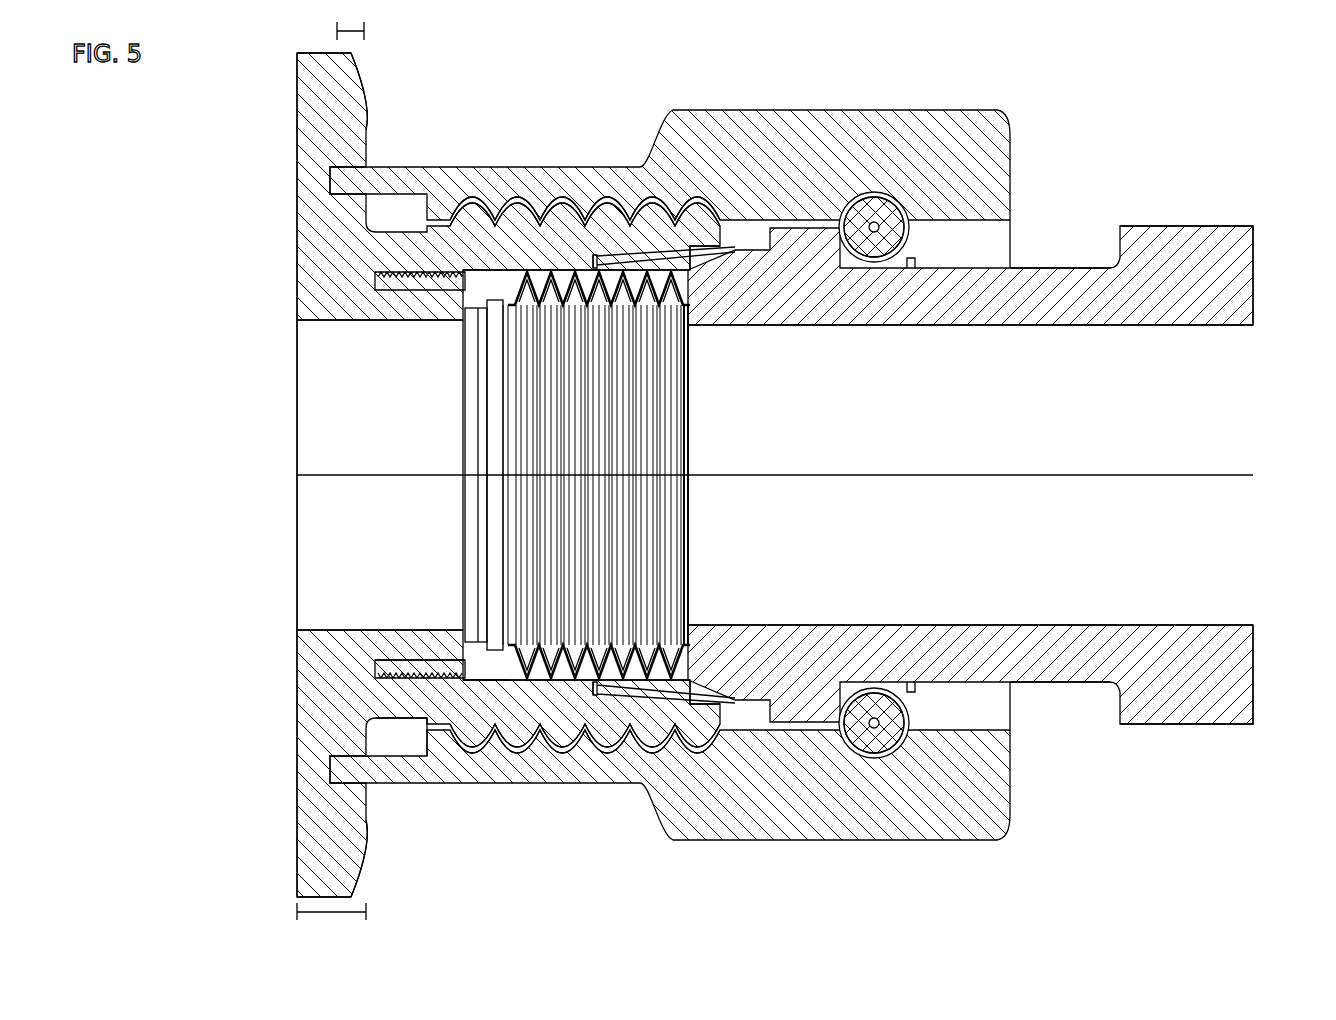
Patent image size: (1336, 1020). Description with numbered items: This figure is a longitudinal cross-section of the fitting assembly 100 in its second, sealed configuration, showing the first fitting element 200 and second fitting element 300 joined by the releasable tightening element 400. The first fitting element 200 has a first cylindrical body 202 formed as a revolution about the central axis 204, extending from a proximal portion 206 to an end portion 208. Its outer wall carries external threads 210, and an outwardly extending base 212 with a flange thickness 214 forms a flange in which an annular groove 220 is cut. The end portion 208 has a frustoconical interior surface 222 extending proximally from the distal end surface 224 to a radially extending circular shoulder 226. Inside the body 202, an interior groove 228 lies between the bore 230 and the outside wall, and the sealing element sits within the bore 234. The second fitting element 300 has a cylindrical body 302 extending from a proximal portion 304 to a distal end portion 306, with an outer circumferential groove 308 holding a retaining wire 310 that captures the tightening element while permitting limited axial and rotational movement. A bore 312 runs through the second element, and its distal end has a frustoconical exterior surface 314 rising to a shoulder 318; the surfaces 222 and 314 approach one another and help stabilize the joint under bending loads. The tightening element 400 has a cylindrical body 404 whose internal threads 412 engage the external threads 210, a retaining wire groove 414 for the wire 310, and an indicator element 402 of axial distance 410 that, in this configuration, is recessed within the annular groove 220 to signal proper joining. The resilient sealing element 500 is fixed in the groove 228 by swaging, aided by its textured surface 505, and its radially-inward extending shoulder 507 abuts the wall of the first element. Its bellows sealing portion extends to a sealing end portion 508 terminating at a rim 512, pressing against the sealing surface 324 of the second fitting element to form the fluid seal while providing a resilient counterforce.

The fitting assembly 100 is at (228, 158).
The first fitting element 200 is at (507, 473).
The first cylindrical body 202 is at (485, 235).
The central axis 204 is at (355, 480).
The proximal portion 206 is at (268, 98).
The end portion 208 is at (690, 682).
The external threads 210 is at (545, 212).
The base 212 is at (297, 135).
The flange thickness 214 is at (366, 912).
The annular groove 220 is at (340, 762).
The frustoconical interior surface 222 is at (700, 282).
The distal end surface 224 is at (745, 240).
The circular shoulder 226 is at (668, 246).
The interior groove 228 is at (350, 288).
The bore 230 is at (365, 352).
The bore 234 is at (470, 672).
The second fitting element 300 is at (1009, 455).
The cylindrical body 302 is at (1030, 298).
The proximal portion 304 is at (1262, 245).
The distal end portion 306 is at (655, 737).
The outer circumferential groove 308 is at (1055, 724).
The retaining wire 310 is at (895, 747).
The bore 312 is at (1115, 328).
The frustoconical exterior surface 314 is at (672, 250).
The shoulder 318 is at (862, 218).
The sealing surface 324 is at (655, 310).
The releasable tightening element 400 is at (634, 450).
The indicator element 402 is at (345, 792).
The cylindrical body 404 is at (452, 185).
The axial distance 410 is at (337, 30).
The internal threads 412 is at (490, 215).
The retaining wire groove 414 is at (900, 222).
The resilient sealing element 500 is at (643, 583).
The textured surface 505 is at (340, 744).
The radially-inward extending shoulder 507 is at (487, 330).
The sealing end portion 508 is at (690, 298).
The rim 512 is at (690, 664).